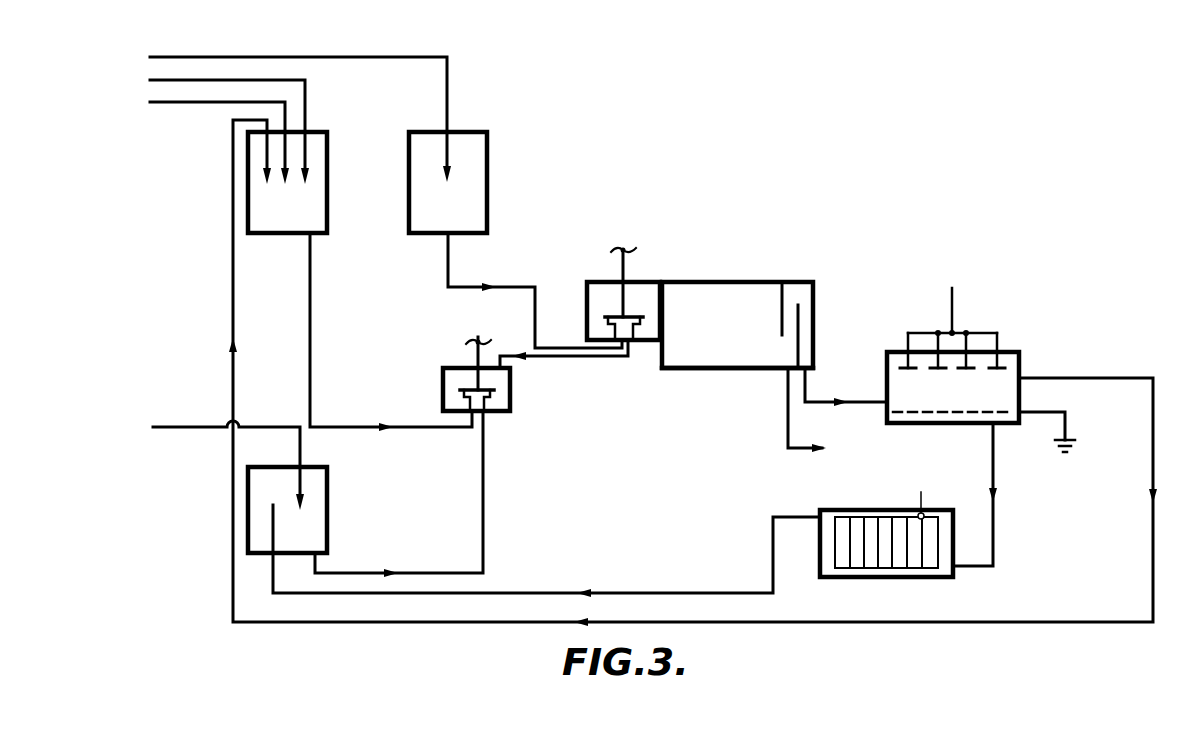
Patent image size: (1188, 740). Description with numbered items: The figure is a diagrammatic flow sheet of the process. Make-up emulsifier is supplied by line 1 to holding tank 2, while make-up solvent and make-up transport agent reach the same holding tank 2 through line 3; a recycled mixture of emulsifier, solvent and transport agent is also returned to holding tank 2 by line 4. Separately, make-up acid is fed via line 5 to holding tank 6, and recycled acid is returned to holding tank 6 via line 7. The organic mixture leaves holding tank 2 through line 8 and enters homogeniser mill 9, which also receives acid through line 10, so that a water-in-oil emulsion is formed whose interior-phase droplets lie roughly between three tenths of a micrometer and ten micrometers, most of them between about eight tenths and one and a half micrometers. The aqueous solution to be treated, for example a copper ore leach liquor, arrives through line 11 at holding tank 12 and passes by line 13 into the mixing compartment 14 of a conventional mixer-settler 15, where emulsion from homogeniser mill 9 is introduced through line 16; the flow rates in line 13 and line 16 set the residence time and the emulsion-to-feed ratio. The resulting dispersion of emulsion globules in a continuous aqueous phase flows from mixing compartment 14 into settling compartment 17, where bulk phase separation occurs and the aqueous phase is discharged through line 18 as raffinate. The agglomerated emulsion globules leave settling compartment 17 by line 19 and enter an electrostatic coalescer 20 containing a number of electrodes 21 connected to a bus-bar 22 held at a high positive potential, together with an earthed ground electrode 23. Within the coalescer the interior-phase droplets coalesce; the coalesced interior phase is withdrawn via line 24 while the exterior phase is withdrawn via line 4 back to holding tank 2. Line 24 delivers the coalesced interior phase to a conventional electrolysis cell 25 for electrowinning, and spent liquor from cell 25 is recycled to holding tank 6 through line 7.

The line 1 is at (184, 103).
The holding tank 2 is at (326, 171).
The line 3 is at (305, 117).
The line 4 is at (233, 213).
The line 5 is at (290, 423).
The holding tank 6 is at (328, 495).
The line 7 is at (674, 591).
The line 8 is at (310, 278).
The homogeniser mill 9 is at (443, 385).
The line 10 is at (483, 474).
The line 11 is at (447, 97).
The holding tank 12 is at (487, 167).
The line 13 is at (450, 264).
The mixing compartment 14 is at (586, 298).
The mixer-settler 15 is at (739, 280).
The line 16 is at (552, 358).
The settling compartment 17 is at (713, 372).
The line 18 is at (789, 415).
The line 19 is at (834, 396).
The electrostatic coalescer 20 is at (1022, 363).
The electrodes 21 is at (987, 373).
The bus-bar 22 is at (925, 333).
The earthed ground electrode 23 is at (915, 413).
The line 24 is at (993, 462).
The electrolysis cell 25 is at (847, 508).